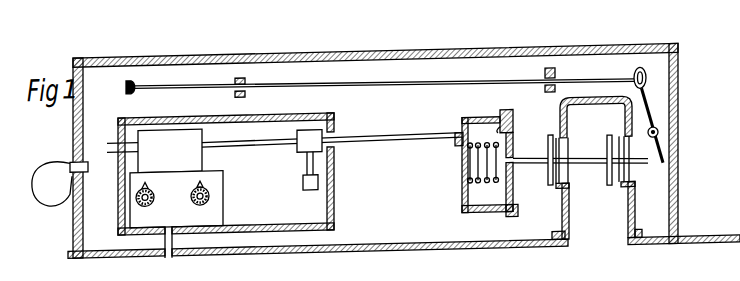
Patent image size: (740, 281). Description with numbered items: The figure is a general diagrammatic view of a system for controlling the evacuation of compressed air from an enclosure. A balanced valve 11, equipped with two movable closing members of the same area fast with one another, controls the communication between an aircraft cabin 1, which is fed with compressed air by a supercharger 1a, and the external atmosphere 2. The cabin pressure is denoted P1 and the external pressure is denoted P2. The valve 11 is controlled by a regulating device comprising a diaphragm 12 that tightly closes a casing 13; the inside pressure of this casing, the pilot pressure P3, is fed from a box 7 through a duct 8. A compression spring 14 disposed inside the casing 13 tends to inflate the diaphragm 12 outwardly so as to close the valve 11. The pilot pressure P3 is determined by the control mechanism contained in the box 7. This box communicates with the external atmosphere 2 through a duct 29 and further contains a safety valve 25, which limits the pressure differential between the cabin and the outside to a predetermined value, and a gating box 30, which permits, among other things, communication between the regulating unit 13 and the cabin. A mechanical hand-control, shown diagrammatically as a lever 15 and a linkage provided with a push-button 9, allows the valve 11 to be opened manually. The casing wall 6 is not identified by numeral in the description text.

The supercharger 1a is at (61, 196).
The casing 6 is at (491, 261).
The box 7 is at (255, 121).
The duct 8 is at (373, 145).
The push-button 9 is at (126, 90).
The balanced valve 11 is at (567, 166).
The diaphragm 12 is at (511, 142).
The casing 13 is at (486, 176).
The compression spring 14 is at (472, 196).
The lever 15 is at (658, 124).
The safety valve 25 is at (303, 190).
The duct 29 is at (172, 244).
The gating box 30 is at (307, 143).
The aircraft cabin 1 is at (549, 211).
The external atmosphere 2 is at (611, 209).
The cabin pressure P1 is at (357, 221).
The external pressure P2 is at (439, 262).
The pilot pressure P3 is at (482, 135).